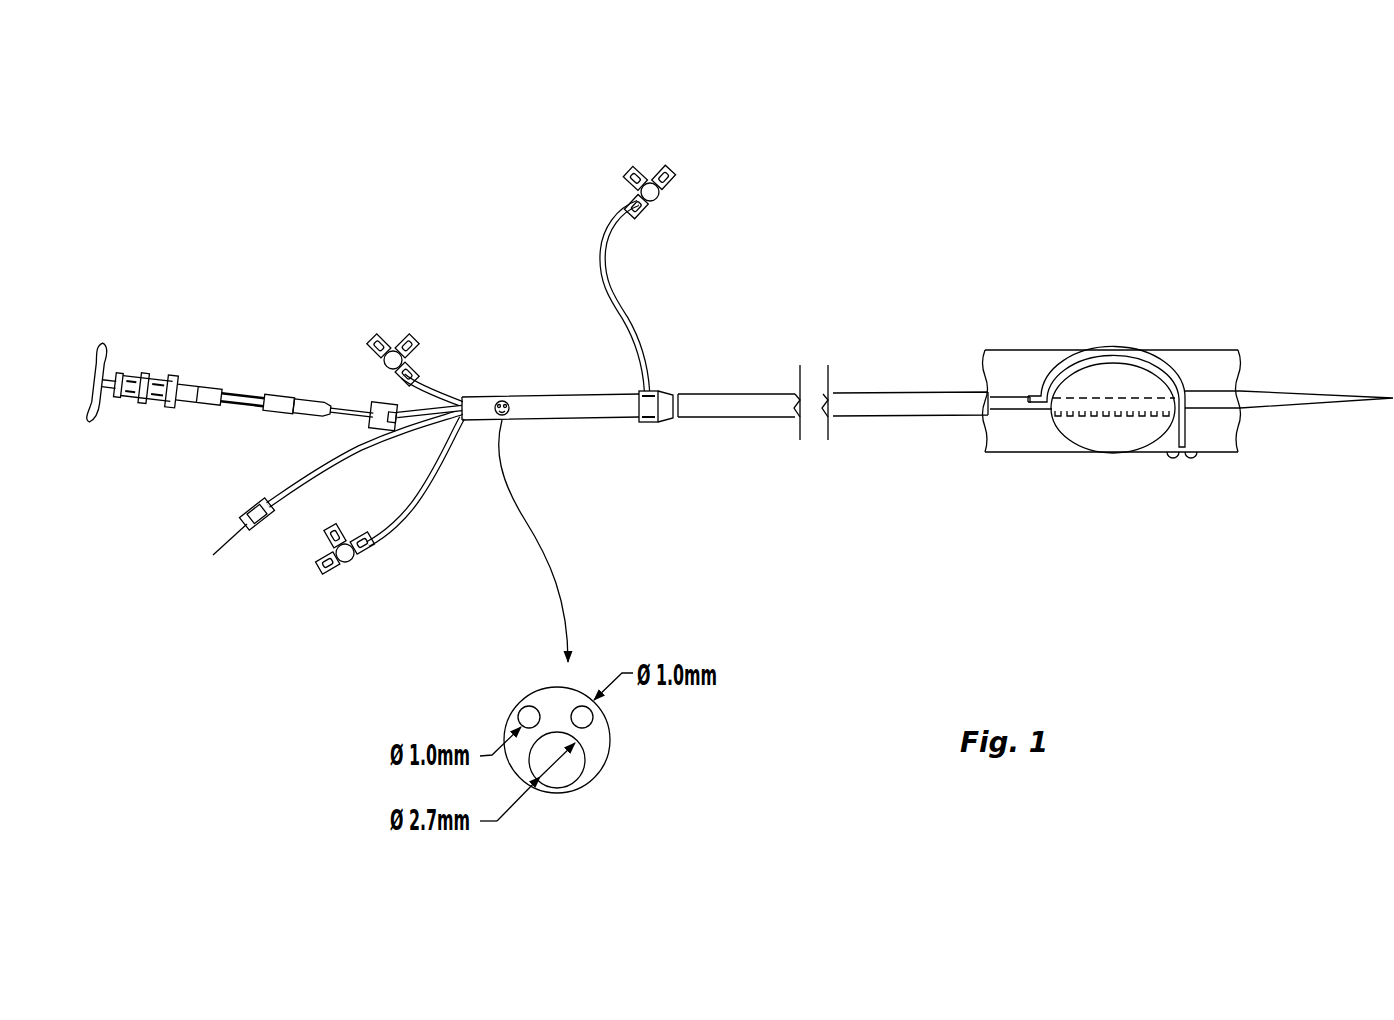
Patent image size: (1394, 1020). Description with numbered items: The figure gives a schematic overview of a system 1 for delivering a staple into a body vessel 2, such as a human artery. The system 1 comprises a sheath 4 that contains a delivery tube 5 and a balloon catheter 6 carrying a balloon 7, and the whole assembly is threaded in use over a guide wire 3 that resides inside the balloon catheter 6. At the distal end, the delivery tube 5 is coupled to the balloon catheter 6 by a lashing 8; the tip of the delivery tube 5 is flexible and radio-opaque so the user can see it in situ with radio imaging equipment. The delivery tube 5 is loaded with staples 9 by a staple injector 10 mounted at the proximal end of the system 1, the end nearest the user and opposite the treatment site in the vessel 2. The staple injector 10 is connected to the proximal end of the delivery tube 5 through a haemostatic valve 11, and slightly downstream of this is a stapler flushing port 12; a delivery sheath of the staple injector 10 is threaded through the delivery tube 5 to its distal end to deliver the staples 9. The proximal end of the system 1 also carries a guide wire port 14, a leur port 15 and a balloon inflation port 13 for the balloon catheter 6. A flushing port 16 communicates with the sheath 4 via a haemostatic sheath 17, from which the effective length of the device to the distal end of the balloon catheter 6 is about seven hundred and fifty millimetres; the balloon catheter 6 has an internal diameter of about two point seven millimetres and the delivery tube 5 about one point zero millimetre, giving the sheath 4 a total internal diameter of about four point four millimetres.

The system 1 is at (393, 153).
The vessel 2 is at (1048, 350).
The guide wire 3 is at (1262, 394).
The sheath 4 is at (917, 392).
The delivery tube 5 is at (1160, 352).
The balloon catheter 6 is at (1027, 407).
The balloon 7 is at (1118, 432).
The lashing 8 is at (1190, 398).
The staple 9 is at (1184, 464).
The staple injector 10 is at (168, 372).
The haemostatic valve 11 is at (374, 402).
The stapler flushing port 12 is at (398, 332).
The balloon inflation port 13 is at (320, 572).
The guide wire port 14 is at (248, 507).
The leur port 15 is at (274, 518).
The flushing port 16 is at (654, 172).
The haemostatic sheath 17 is at (653, 418).